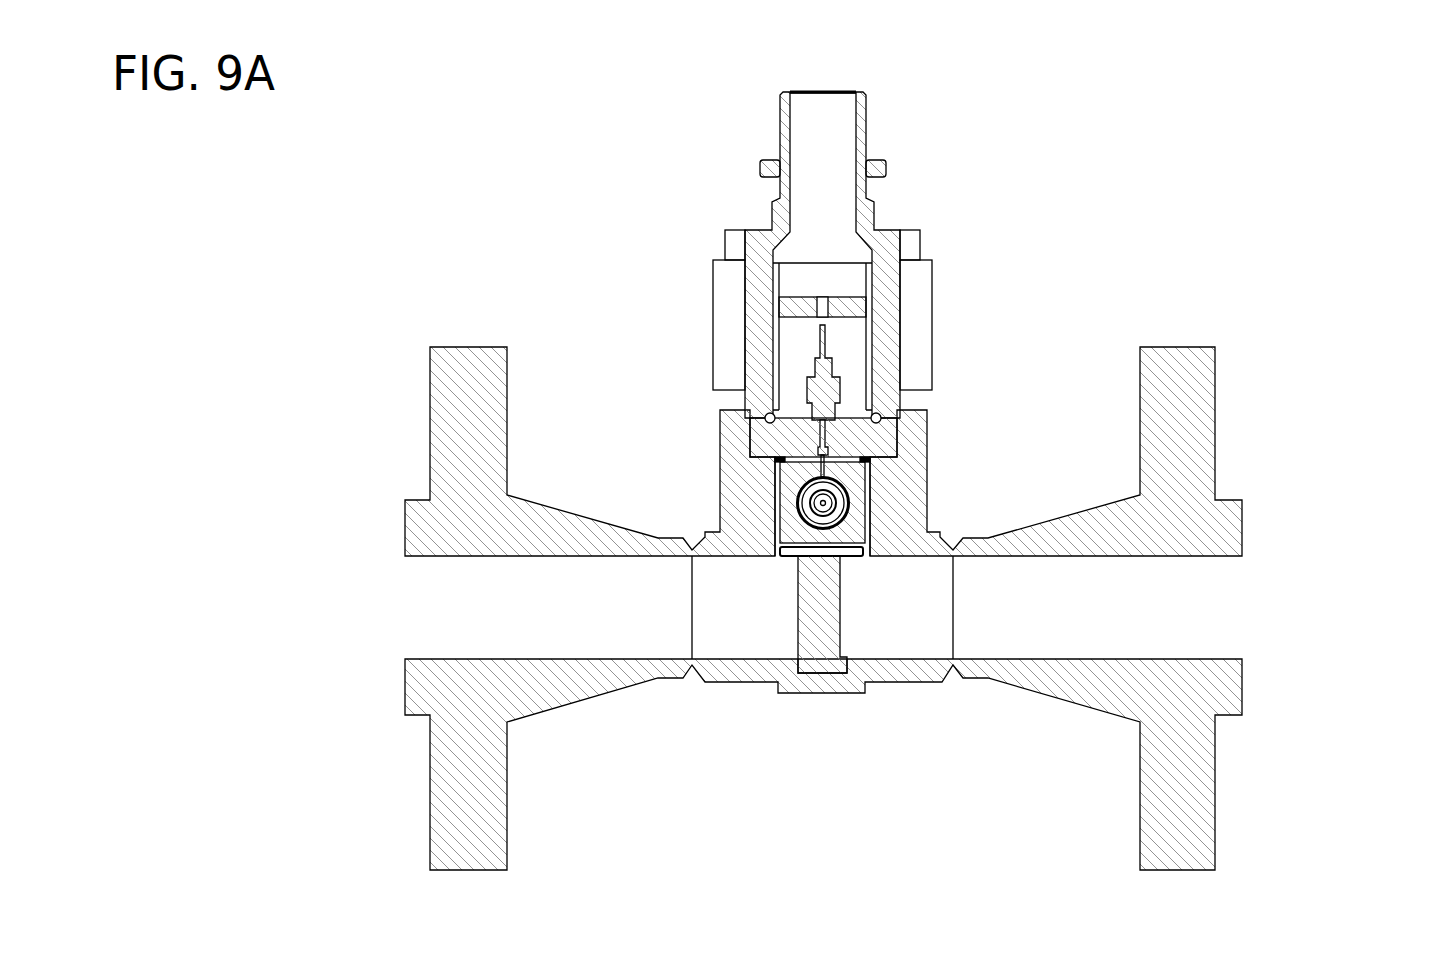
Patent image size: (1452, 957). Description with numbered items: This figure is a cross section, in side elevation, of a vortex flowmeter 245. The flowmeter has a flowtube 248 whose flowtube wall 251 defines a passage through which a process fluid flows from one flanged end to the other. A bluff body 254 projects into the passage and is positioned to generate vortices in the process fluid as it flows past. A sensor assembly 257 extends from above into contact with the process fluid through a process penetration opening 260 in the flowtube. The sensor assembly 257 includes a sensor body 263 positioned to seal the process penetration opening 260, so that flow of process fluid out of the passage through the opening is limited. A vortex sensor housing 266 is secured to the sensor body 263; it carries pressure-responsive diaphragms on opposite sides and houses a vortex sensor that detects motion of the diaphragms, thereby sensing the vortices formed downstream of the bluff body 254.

The vortex flowmeter 245 is at (1294, 202).
The flowtube 248 is at (1078, 513).
The flowtube wall 251 is at (1022, 645).
The bluff body 254 is at (840, 632).
The sensor assembly 257 is at (758, 440).
The process penetration opening 260 is at (897, 452).
The sensor body 263 is at (887, 442).
The vortex sensor housing 266 is at (853, 560).